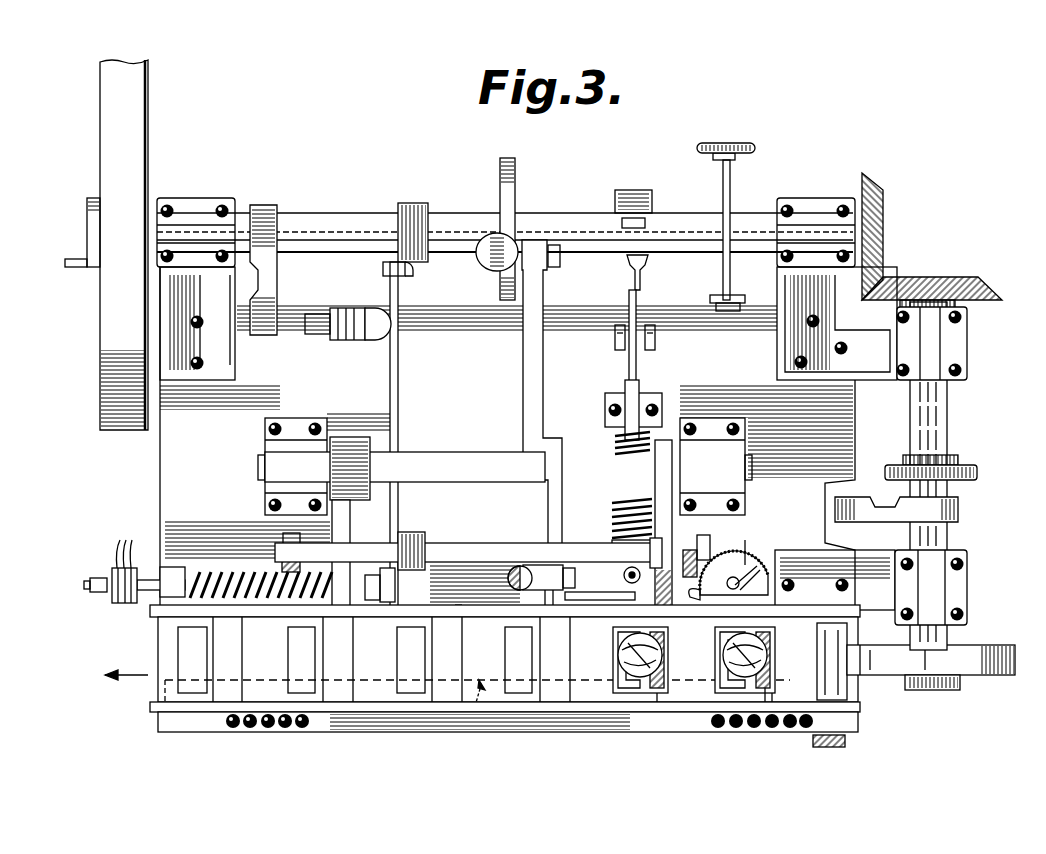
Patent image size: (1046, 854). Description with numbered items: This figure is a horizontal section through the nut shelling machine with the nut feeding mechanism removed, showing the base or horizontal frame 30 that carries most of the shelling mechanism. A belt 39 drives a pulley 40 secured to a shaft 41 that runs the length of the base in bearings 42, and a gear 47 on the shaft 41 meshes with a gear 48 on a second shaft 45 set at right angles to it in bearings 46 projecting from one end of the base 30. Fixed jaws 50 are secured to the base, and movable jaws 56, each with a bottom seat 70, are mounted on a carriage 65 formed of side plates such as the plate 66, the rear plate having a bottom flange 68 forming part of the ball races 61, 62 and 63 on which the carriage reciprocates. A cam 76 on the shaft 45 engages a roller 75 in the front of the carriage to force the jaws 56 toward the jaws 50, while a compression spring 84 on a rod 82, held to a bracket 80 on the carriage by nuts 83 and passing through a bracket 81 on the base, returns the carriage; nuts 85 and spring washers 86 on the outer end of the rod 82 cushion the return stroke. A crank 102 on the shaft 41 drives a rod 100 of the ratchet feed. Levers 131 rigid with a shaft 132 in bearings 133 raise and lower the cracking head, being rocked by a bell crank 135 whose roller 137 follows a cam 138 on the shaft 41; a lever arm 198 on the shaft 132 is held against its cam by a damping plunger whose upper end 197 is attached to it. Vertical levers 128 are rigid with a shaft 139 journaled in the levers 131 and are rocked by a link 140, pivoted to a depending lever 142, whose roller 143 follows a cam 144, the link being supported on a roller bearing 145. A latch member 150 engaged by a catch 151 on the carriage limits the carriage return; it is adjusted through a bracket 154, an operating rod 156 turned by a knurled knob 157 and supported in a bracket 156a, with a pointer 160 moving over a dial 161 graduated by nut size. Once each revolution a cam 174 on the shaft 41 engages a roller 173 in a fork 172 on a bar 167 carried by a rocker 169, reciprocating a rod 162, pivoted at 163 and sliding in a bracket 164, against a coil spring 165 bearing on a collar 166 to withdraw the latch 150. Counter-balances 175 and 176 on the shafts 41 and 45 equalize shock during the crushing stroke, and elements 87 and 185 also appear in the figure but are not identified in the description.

The base or horizontal frame 30 is at (165, 465).
The belt 39 is at (108, 103).
The pulley 40 is at (100, 378).
The shaft 41 is at (555, 218).
The bearings 42 is at (192, 207).
The second shaft 45 is at (932, 423).
The bearings 46 is at (940, 350).
The gear 47 is at (883, 235).
The gear 48 is at (935, 282).
The fixed jaws 50 is at (640, 690).
The movable jaws 56 is at (657, 705).
The ball race 61 is at (755, 730).
The ball race 62 is at (278, 730).
The ball race 63 is at (225, 572).
The carriage 65 is at (433, 714).
The side plate 66 is at (415, 703).
The bottom flange 68 is at (545, 722).
The bottom seat 70 is at (778, 712).
The roller 75 is at (848, 688).
The cam 76 is at (992, 646).
The bracket 80 is at (505, 600).
The bracket 81 is at (172, 567).
The rod 82 is at (130, 605).
The nut 83 is at (396, 590).
The compression spring 84 is at (283, 540).
The nuts 85 is at (98, 593).
The spring washers 86 is at (119, 545).
The pin 87 is at (457, 615).
The rod 100 is at (65, 263).
The crank 102 is at (87, 214).
The vertical levers 128 is at (282, 555).
The levers 131 is at (345, 535).
The shaft 132 is at (455, 457).
The bearings 133 is at (265, 445).
The prime mover or bell crank 135 is at (545, 386).
The roller 137 is at (490, 248).
The cam 138 is at (510, 185).
The shaft 139 is at (478, 548).
The link 140 is at (395, 395).
The depending lever 142 is at (410, 535).
The roller 143 is at (415, 278).
The cam 144 is at (410, 220).
The roller bearing 145 is at (372, 340).
The latch member 150 is at (595, 595).
The catch or stop 151 is at (515, 600).
The bracket 154 is at (745, 560).
The operating rod 156 is at (723, 275).
The bracket 156a is at (742, 298).
The knurled knob 157 is at (760, 132).
The pointer 160 is at (748, 540).
The dial 161 is at (760, 572).
The rod 162 is at (612, 544).
The pivotal connection 163 is at (630, 583).
The bracket 164 is at (650, 395).
The coil spring 165 is at (622, 440).
The rigid collar 166 is at (624, 524).
The bar 167 is at (629, 300).
The rocker 169 is at (652, 330).
The fork 172 is at (627, 262).
The roller 173 is at (632, 190).
The cam 174 is at (646, 220).
The counter-balance 175 is at (265, 237).
The counter-balance 176 is at (958, 512).
The gear 185 is at (962, 465).
The upper end of plunger 197 is at (556, 600).
The lever arm 198 is at (538, 598).